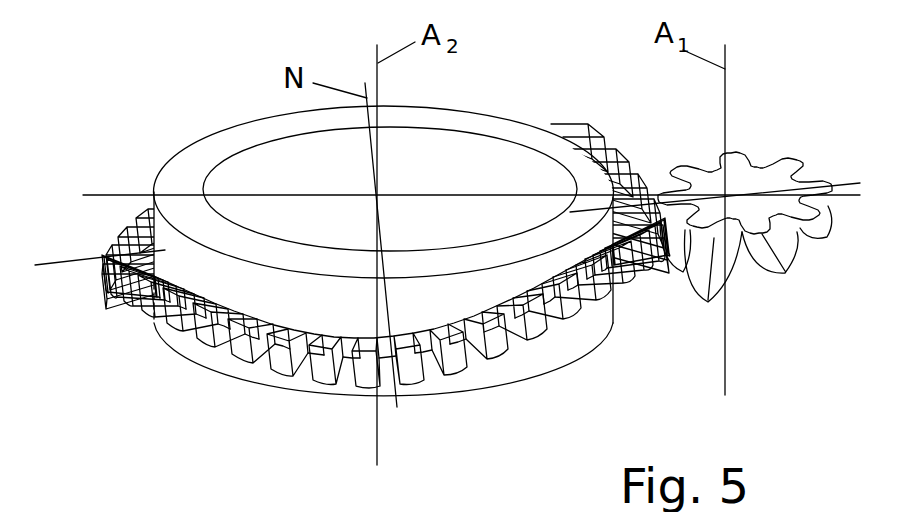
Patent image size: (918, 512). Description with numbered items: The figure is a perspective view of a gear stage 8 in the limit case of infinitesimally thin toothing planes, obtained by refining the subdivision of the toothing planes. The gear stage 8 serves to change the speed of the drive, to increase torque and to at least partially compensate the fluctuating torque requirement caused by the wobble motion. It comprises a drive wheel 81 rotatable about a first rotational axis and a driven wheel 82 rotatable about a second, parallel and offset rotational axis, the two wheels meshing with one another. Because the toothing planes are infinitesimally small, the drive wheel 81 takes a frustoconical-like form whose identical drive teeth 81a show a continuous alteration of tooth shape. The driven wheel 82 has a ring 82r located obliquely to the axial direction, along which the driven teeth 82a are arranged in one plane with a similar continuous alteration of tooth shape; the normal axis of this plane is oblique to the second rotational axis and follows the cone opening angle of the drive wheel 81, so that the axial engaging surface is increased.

The gear stage 8 is at (467, 248).
The drive wheel 81 is at (745, 225).
The drive teeth 81a is at (722, 290).
The driven wheel 82 is at (386, 248).
The driven teeth 82a is at (230, 367).
The ring 82r is at (448, 335).